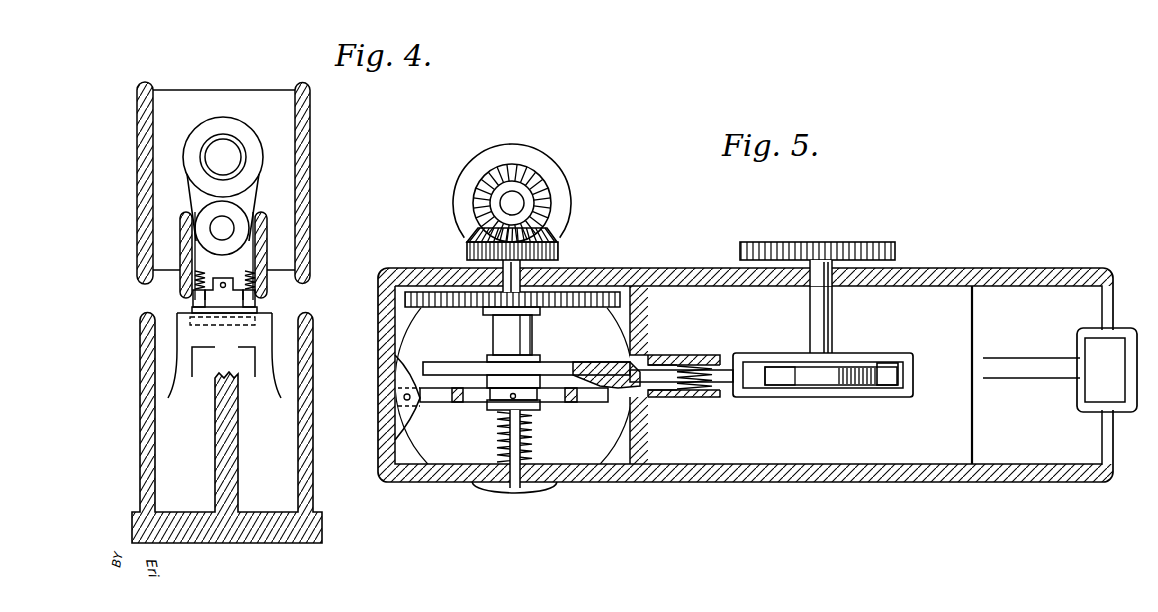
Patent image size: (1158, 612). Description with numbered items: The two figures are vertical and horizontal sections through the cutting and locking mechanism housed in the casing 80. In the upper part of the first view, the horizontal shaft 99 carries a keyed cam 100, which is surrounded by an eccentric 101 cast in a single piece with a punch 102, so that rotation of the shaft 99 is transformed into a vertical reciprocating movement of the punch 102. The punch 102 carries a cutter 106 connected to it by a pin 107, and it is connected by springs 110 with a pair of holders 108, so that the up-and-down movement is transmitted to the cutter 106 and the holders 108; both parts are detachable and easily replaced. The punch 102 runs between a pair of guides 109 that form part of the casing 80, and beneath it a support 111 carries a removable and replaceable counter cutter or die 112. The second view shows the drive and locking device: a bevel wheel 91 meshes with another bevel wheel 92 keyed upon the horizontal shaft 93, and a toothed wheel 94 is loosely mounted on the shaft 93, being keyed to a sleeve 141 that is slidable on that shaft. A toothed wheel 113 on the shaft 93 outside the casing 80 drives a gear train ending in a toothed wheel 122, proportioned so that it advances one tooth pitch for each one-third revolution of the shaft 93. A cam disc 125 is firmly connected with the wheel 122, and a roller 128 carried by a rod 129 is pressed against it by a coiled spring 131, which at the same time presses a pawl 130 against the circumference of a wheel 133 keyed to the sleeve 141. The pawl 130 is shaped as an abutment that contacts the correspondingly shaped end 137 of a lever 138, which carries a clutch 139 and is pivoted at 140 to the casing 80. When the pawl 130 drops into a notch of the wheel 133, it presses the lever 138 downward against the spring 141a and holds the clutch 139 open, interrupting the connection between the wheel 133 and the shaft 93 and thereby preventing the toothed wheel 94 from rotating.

In FIG. 4, the casing 80 is at (304, 170).
In FIG. 5, the casing 80 is at (709, 276).
In FIG. 4, the horizontal shaft 99 is at (208, 154).
In FIG. 4, the cam 100 is at (233, 138).
In FIG. 4, the eccentric 101 is at (255, 148).
In FIG. 4, the punch 102 is at (250, 246).
In FIG. 4, the cutter 106 is at (218, 298).
In FIG. 4, the pin 107 is at (223, 282).
In FIG. 4, the holders 108 is at (262, 300).
In FIG. 4, the guides 109 is at (183, 242).
In FIG. 4, the springs 110 is at (185, 277).
In FIG. 4, the support 111 is at (307, 373).
In FIG. 4, the counter cutter or die 112 is at (183, 325).
In FIG. 5, the bevel wheel 91 is at (547, 187).
In FIG. 5, the bevel wheel 92 is at (550, 232).
In FIG. 5, the toothed wheel 113 is at (558, 251).
In FIG. 5, the toothed wheel 94 is at (609, 300).
In FIG. 5, the toothed wheel 122 is at (857, 242).
In FIG. 5, the cam disc 125 is at (832, 373).
In FIG. 5, the roller 128 is at (888, 381).
In FIG. 5, the rod 129 is at (835, 396).
In FIG. 5, the pawl 130 is at (658, 378).
In FIG. 5, the coiled spring 131 is at (706, 372).
In FIG. 5, the wheel 133 is at (443, 364).
In FIG. 5, the end of lever 137 is at (595, 398).
In FIG. 5, the lever 138 is at (583, 386).
In FIG. 5, the clutch 139 is at (540, 406).
In FIG. 5, the pivot 140 is at (404, 396).
In FIG. 5, the sleeve 141 is at (518, 325).
In FIG. 5, the spring 141a is at (500, 450).
In FIG. 5, the horizontal shaft 93 is at (500, 425).